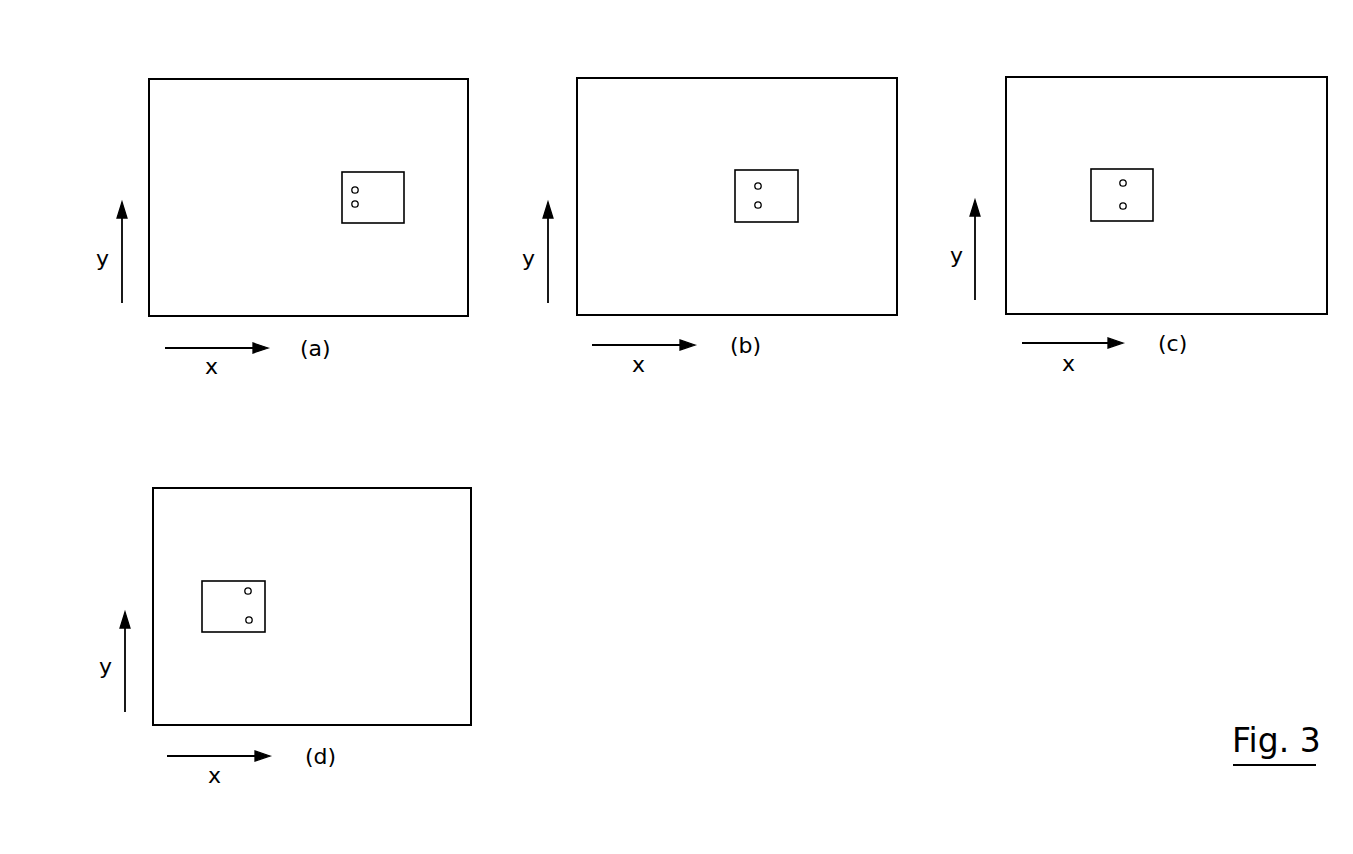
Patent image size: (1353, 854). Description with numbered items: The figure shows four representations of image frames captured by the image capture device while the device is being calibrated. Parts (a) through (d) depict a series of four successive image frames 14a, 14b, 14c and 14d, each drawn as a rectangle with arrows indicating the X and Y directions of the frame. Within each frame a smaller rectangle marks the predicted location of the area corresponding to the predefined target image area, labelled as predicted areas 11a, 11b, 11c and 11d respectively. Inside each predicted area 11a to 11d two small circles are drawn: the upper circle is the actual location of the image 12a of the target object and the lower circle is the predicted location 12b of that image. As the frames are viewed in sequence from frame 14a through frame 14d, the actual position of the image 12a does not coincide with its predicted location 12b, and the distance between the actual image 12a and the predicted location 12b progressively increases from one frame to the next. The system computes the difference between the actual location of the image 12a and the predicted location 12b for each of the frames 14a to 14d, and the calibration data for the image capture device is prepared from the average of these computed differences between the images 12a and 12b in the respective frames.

The image frame 14a is at (255, 79).
The image frame 14b is at (683, 78).
The image frame 14c is at (1085, 77).
The image frame 14d is at (260, 488).
The predicted area corresponding to the target image area 11a is at (342, 187).
The predicted area corresponding to the target image area 11b is at (735, 186).
The predicted area corresponding to the target image area 11c is at (1153, 190).
The predicted area corresponding to the target image area 11d is at (265, 612).
The image of the target object 12a is at (355, 187).
The predicted location of the image of the target object 12b is at (355, 207).